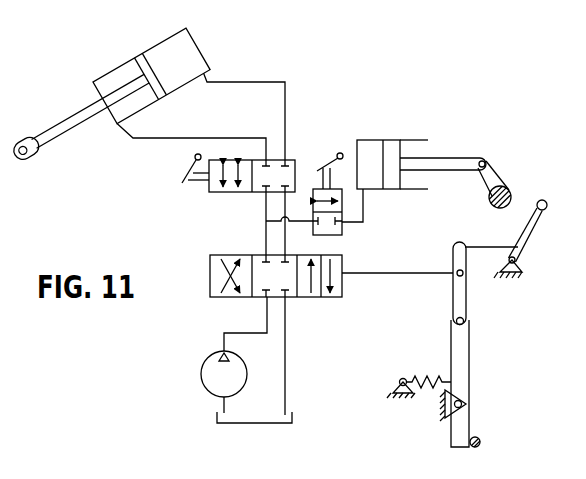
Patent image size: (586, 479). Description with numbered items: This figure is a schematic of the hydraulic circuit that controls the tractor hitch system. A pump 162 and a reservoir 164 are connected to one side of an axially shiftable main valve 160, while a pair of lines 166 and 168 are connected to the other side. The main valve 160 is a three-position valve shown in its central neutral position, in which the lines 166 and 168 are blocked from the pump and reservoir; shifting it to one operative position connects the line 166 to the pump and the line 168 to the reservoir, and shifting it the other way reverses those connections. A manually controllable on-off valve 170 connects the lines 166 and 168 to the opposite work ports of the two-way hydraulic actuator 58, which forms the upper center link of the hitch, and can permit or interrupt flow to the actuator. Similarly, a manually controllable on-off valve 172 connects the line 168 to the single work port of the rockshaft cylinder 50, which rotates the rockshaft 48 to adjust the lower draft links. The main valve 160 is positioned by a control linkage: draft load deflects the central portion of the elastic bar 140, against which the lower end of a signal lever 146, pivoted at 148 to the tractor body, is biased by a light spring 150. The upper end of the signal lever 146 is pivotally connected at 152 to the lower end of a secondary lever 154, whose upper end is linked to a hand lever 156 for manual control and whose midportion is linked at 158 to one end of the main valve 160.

The two-way hydraulic actuator 58 is at (151, 47).
The rockshaft cylinder 50 is at (377, 139).
The rockshaft 48 is at (507, 189).
The manually controllable on-off valve 170 is at (225, 193).
The line 168 is at (266, 208).
The line 166 is at (285, 238).
The manually controllable on-off valve 172 is at (342, 230).
The main valve 160 is at (322, 298).
The pump 162 is at (201, 376).
The reservoir 164 is at (293, 413).
The link 158 is at (396, 274).
The hand lever 156 is at (529, 233).
The secondary lever 154 is at (466, 302).
The pivotal connection 152 is at (466, 323).
The light spring 150 is at (417, 377).
The signal lever 146 is at (470, 387).
The pivot 148 is at (463, 404).
The elastic bar 140 is at (481, 443).